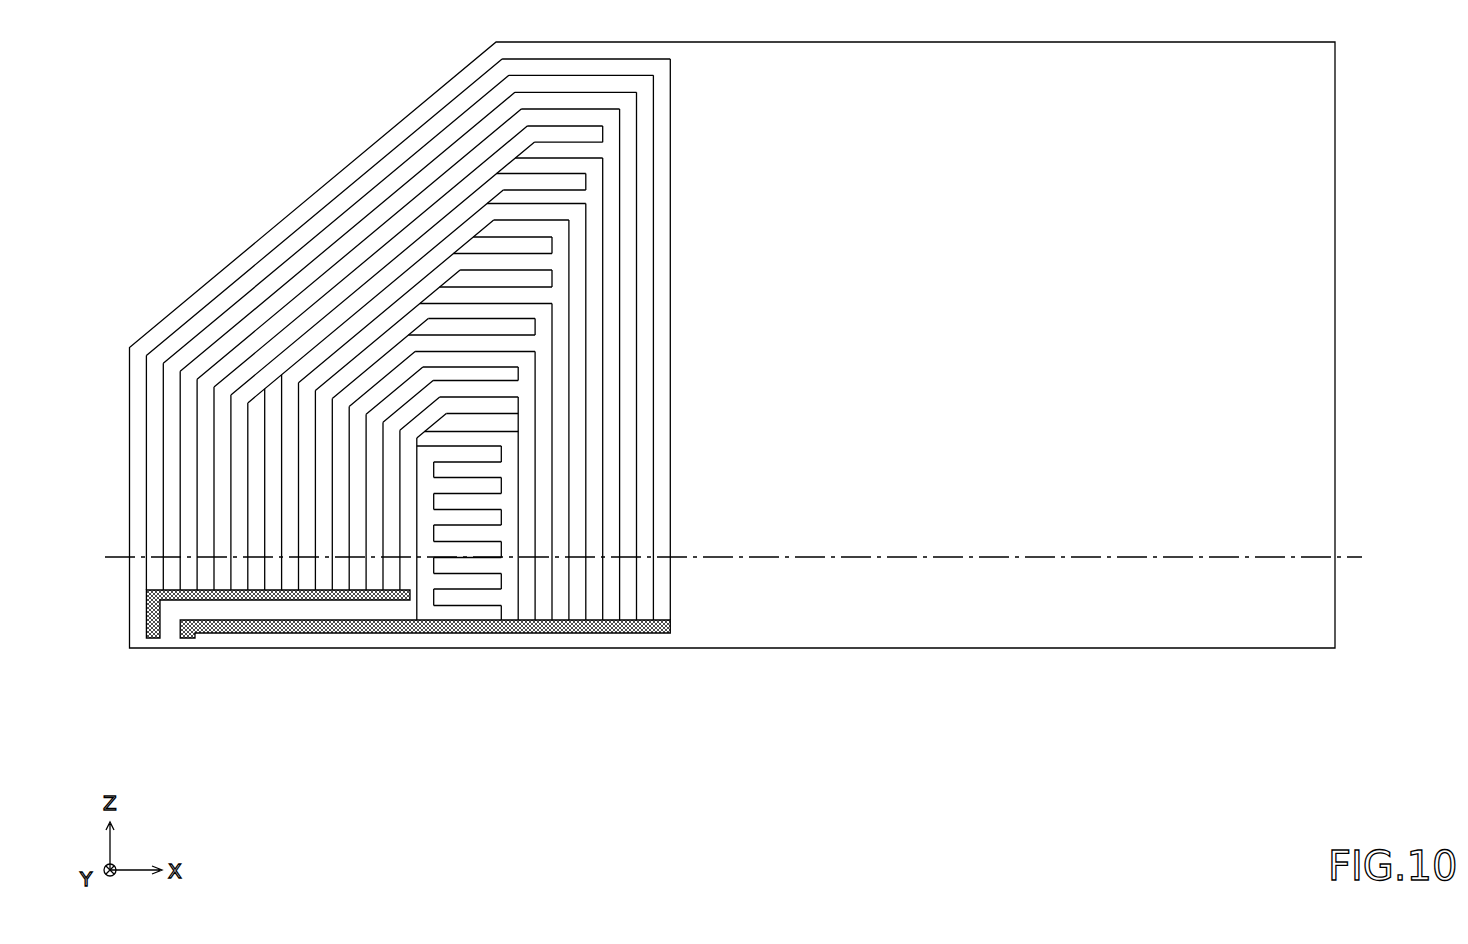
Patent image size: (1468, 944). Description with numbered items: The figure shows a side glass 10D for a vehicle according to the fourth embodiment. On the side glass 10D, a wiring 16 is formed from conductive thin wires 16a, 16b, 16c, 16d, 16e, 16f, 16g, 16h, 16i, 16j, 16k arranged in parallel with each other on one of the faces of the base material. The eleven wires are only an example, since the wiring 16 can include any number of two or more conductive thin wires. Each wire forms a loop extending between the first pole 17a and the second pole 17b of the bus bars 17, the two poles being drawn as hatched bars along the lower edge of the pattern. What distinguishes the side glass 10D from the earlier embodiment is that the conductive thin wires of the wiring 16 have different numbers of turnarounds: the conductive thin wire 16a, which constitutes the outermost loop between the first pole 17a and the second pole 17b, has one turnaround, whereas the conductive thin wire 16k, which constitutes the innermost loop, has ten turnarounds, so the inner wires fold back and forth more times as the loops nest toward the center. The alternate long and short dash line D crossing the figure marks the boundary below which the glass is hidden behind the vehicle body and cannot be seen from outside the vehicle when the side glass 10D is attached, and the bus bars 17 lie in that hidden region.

The side glass 10D is at (135, 86).
The wiring 16 is at (381, 420).
The conductive thin wire 16a is at (146, 578).
The conductive thin wire 16b is at (163, 578).
The conductive thin wire 16c is at (180, 578).
The conductive thin wire 16d is at (197, 578).
The conductive thin wire 16e is at (214, 578).
The conductive thin wire 16f is at (231, 578).
The conductive thin wire 16g is at (248, 578).
The conductive thin wire 16h is at (265, 578).
The conductive thin wire 16i is at (282, 578).
The conductive thin wire 16j is at (298, 578).
The conductive thin wire 16k is at (408, 490).
The bus bars 17 is at (408, 686).
The first pole 17a is at (412, 602).
The second pole 17b is at (553, 634).
The alternate long and short dash line D is at (917, 562).